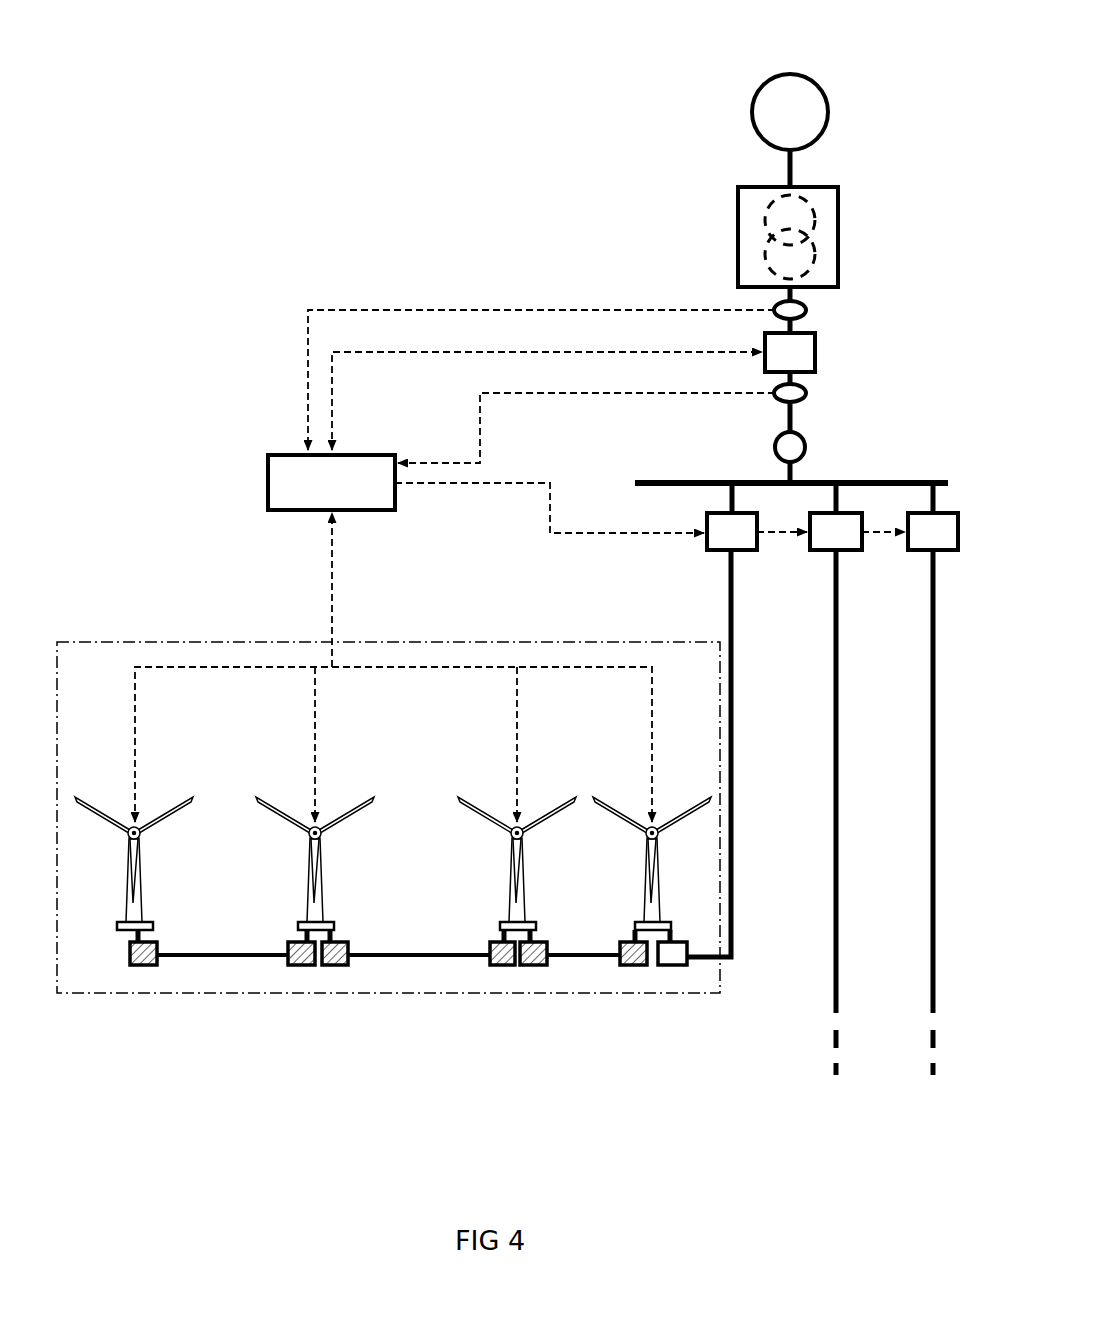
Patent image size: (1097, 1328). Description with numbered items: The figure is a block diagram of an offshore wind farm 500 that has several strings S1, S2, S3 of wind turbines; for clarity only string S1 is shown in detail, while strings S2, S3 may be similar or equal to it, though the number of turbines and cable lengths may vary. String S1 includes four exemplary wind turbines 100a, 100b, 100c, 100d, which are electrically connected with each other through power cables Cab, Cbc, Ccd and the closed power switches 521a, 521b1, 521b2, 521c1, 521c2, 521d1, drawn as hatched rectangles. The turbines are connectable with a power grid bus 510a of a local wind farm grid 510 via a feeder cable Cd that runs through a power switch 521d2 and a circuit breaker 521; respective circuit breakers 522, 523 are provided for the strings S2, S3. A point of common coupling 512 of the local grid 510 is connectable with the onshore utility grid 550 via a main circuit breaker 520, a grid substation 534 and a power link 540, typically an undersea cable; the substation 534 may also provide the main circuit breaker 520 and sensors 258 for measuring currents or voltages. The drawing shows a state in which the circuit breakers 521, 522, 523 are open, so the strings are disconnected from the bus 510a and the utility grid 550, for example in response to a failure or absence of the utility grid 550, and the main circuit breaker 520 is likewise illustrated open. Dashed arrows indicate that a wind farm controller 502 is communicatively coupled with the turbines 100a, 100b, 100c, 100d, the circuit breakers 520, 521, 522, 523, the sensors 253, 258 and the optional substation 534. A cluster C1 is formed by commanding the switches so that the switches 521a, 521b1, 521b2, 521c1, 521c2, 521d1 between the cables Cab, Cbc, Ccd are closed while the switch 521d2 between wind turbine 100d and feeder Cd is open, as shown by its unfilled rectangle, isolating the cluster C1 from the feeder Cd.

The wind farm 500 is at (448, 165).
The utility grid 550 is at (768, 80).
The power link 540 is at (775, 168).
The grid substation 534 is at (720, 235).
The sensors 258 is at (806, 312).
The main circuit breaker 520 is at (805, 352).
The sensors 253 is at (806, 395).
The point of common coupling 512 is at (806, 450).
The local wind farm grid 510 is at (920, 452).
The power grid bus 510a is at (618, 482).
The wind farm controller 502 is at (295, 455).
The circuit breaker 521 is at (725, 537).
The circuit breaker 522 is at (822, 545).
The circuit breaker 523 is at (922, 545).
The cluster C1 is at (148, 640).
The wind turbine 100a is at (120, 785).
The wind turbine 100b is at (278, 785).
The wind turbine 100c is at (500, 797).
The wind turbine 100d is at (638, 797).
The power cable Cab is at (250, 950).
The power cable Cbc is at (447, 950).
The power cable Ccd is at (600, 950).
The feeder Cd is at (737, 855).
The power switch 521a is at (143, 966).
The power switch 521b1 is at (300, 966).
The power switch 521b2 is at (336, 966).
The power switch 521c1 is at (502, 966).
The power switch 521c2 is at (536, 966).
The power switch 521d1 is at (632, 966).
The power switch 521d2 is at (672, 966).
The string S1 is at (432, 1027).
The string S2 is at (829, 1088).
The string S3 is at (932, 1097).